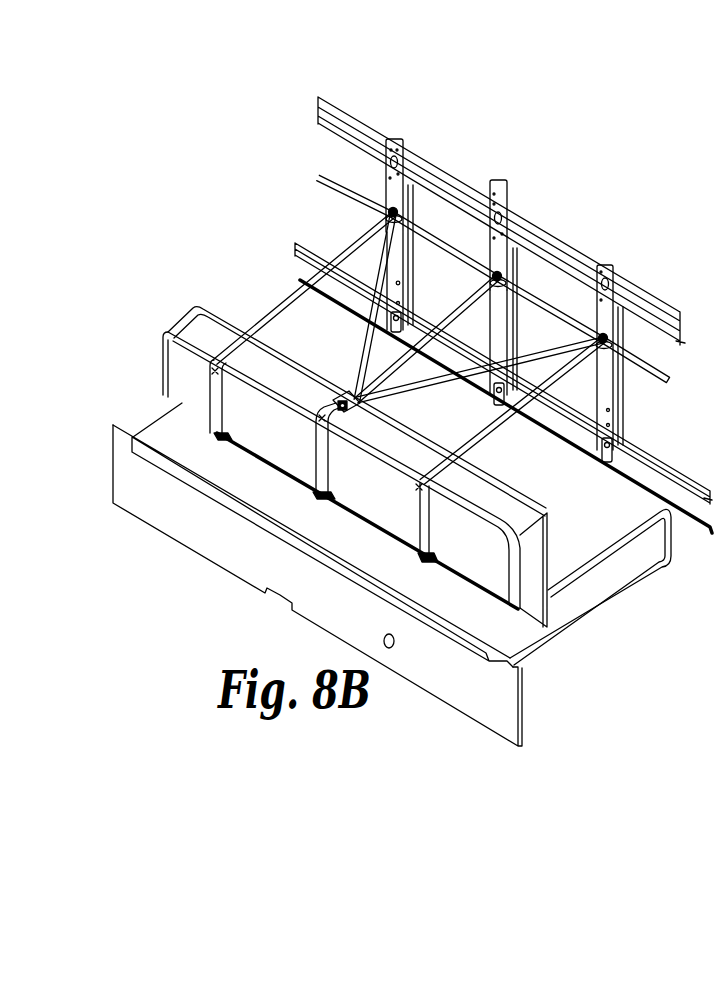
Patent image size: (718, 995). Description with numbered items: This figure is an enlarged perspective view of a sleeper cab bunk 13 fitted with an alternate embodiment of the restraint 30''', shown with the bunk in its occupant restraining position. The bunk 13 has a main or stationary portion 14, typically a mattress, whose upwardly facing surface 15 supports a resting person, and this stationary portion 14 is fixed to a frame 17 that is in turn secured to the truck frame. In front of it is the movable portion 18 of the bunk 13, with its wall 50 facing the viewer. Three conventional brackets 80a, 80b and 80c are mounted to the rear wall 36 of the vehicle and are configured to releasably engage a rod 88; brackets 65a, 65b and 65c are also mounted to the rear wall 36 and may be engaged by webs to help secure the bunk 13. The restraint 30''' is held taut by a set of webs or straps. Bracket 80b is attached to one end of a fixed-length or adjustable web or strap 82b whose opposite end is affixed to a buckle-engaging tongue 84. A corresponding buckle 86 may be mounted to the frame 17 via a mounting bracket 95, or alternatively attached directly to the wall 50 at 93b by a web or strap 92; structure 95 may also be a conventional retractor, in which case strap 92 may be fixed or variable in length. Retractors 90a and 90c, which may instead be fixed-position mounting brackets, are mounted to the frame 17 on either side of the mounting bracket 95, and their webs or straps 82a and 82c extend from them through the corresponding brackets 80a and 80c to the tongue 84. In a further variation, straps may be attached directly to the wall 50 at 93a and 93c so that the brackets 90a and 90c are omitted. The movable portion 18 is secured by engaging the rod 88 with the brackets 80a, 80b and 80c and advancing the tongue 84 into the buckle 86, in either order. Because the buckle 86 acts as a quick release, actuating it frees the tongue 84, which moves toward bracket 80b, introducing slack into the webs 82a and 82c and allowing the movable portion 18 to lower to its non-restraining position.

The rear wall 36 is at (510, 208).
The bracket 80a is at (388, 206).
The bracket 80b is at (494, 270).
The bracket 80c is at (600, 332).
The rod 88 is at (671, 380).
The restraint 30''' is at (267, 233).
The upwardly facing surface 15 is at (669, 513).
The bracket 65a is at (405, 320).
The bracket 65b is at (494, 400).
The bracket 65c is at (603, 465).
The web or strap 82a is at (283, 306).
The web or strap 82b is at (446, 324).
The web or strap 82c is at (414, 388).
The wall of the movable portion 50 is at (176, 388).
The attachment point 93a is at (212, 371).
The attachment point 93b is at (320, 420).
The attachment point 93c is at (418, 488).
The retractor 90a is at (224, 442).
The retractor 90c is at (430, 563).
The web or strap 92 is at (329, 462).
The mounting bracket 95 is at (326, 500).
The buckle-engaging tongue 84 is at (346, 392).
The buckle 86 is at (337, 404).
The stationary portion 14 is at (632, 558).
The movable portion 18 is at (553, 593).
The bunk 13 is at (606, 604).
The frame 17 is at (548, 645).